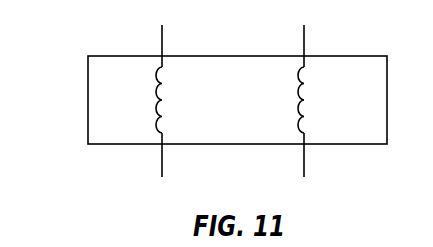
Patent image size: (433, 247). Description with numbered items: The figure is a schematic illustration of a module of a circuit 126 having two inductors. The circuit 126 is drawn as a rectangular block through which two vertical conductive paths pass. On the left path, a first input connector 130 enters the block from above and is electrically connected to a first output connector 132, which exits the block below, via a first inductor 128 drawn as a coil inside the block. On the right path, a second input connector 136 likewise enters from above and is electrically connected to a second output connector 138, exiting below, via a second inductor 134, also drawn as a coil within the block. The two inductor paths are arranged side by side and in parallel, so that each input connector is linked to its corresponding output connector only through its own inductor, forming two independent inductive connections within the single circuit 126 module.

The circuit 126 is at (107, 100).
The first inductor 128 is at (163, 100).
The first input connector 130 is at (162, 55).
The first output connector 132 is at (162, 146).
The second inductor 134 is at (305, 100).
The second input connector 136 is at (304, 55).
The second output connector 138 is at (304, 146).